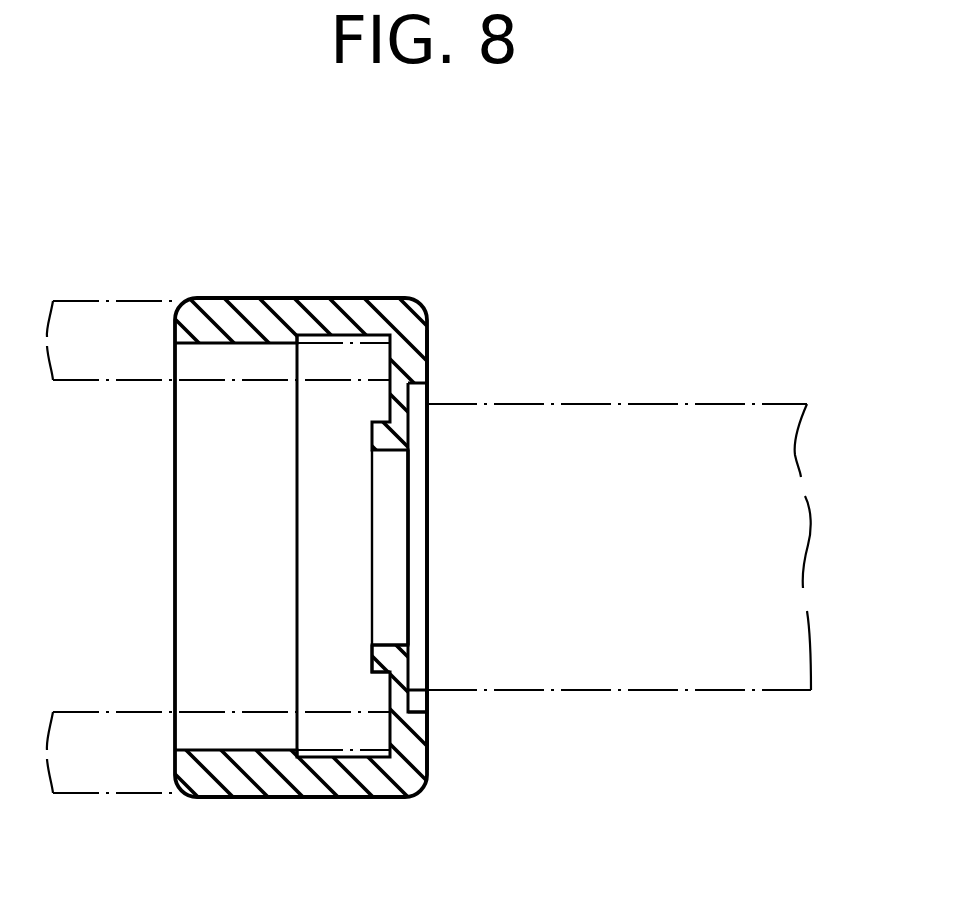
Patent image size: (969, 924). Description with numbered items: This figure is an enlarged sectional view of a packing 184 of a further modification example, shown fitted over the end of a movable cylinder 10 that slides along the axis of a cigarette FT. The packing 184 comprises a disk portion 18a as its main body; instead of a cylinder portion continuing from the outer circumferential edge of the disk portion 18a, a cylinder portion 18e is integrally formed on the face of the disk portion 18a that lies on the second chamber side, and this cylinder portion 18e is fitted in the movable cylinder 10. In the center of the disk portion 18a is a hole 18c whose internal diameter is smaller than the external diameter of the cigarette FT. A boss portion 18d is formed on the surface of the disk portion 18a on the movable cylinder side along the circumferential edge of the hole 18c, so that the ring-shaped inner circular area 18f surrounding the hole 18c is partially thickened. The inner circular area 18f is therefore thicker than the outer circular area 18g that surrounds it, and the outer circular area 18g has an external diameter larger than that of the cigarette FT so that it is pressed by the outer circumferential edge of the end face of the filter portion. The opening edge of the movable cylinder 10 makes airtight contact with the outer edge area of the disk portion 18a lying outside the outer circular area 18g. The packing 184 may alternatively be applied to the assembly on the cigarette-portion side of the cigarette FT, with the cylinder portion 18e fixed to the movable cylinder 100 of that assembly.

The movable cylinder 10 is at (218, 495).
The movable cylinder 100 is at (137, 308).
The packing 184 is at (288, 299).
The cigarette FT is at (665, 430).
The disk portion 18a is at (430, 742).
The hole 18c is at (387, 642).
The boss portion 18d is at (403, 647).
The inner circular area 18f is at (395, 660).
The outer circular area 18g is at (428, 691).
The cylinder portion 18e is at (305, 800).